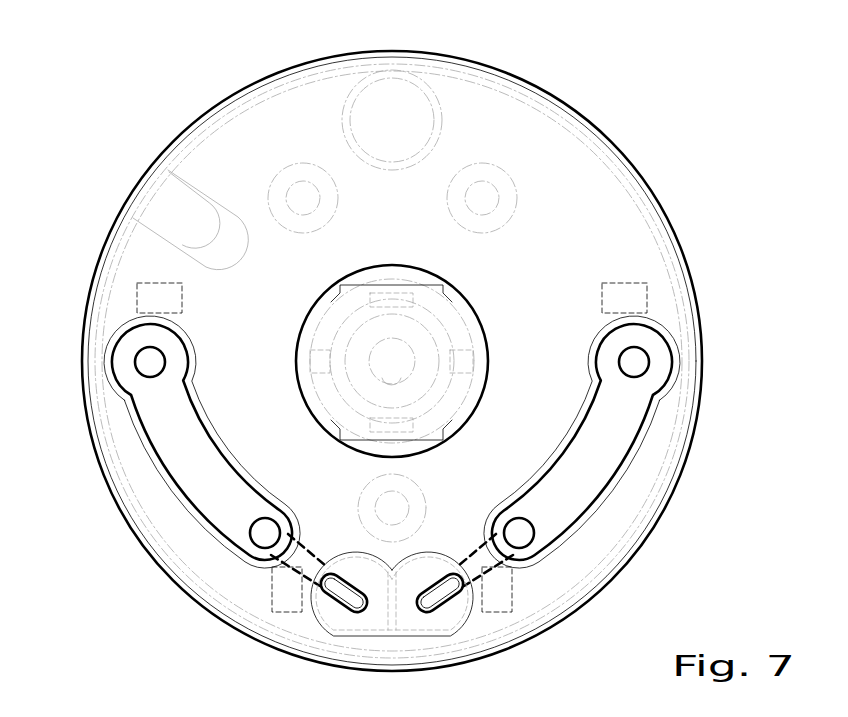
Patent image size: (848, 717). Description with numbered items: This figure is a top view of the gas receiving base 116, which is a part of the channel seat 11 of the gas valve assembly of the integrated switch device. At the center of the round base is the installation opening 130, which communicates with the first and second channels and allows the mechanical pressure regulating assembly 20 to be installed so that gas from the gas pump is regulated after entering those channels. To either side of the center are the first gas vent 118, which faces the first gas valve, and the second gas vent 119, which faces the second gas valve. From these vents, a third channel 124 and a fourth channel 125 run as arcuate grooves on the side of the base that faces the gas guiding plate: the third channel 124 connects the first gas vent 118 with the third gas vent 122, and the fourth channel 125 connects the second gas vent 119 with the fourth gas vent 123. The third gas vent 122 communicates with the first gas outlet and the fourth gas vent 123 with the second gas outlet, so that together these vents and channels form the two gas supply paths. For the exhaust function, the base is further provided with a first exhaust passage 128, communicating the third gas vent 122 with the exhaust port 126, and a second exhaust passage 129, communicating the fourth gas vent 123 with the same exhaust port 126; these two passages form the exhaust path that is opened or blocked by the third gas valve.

The channel seat 11 is at (130, 193).
The mechanical pressure regulating assembly 20 is at (390, 292).
The gas receiving base 116 is at (613, 132).
The first gas vent 118 is at (148, 362).
The second gas vent 119 is at (636, 362).
The third gas vent 122 is at (262, 533).
The fourth gas vent 123 is at (522, 533).
The third channel 124 is at (142, 443).
The fourth channel 125 is at (642, 443).
The exhaust port 126 is at (470, 622).
The first exhaust passage 128 is at (273, 568).
The second exhaust passage 129 is at (511, 568).
The installation opening 130 is at (420, 266).